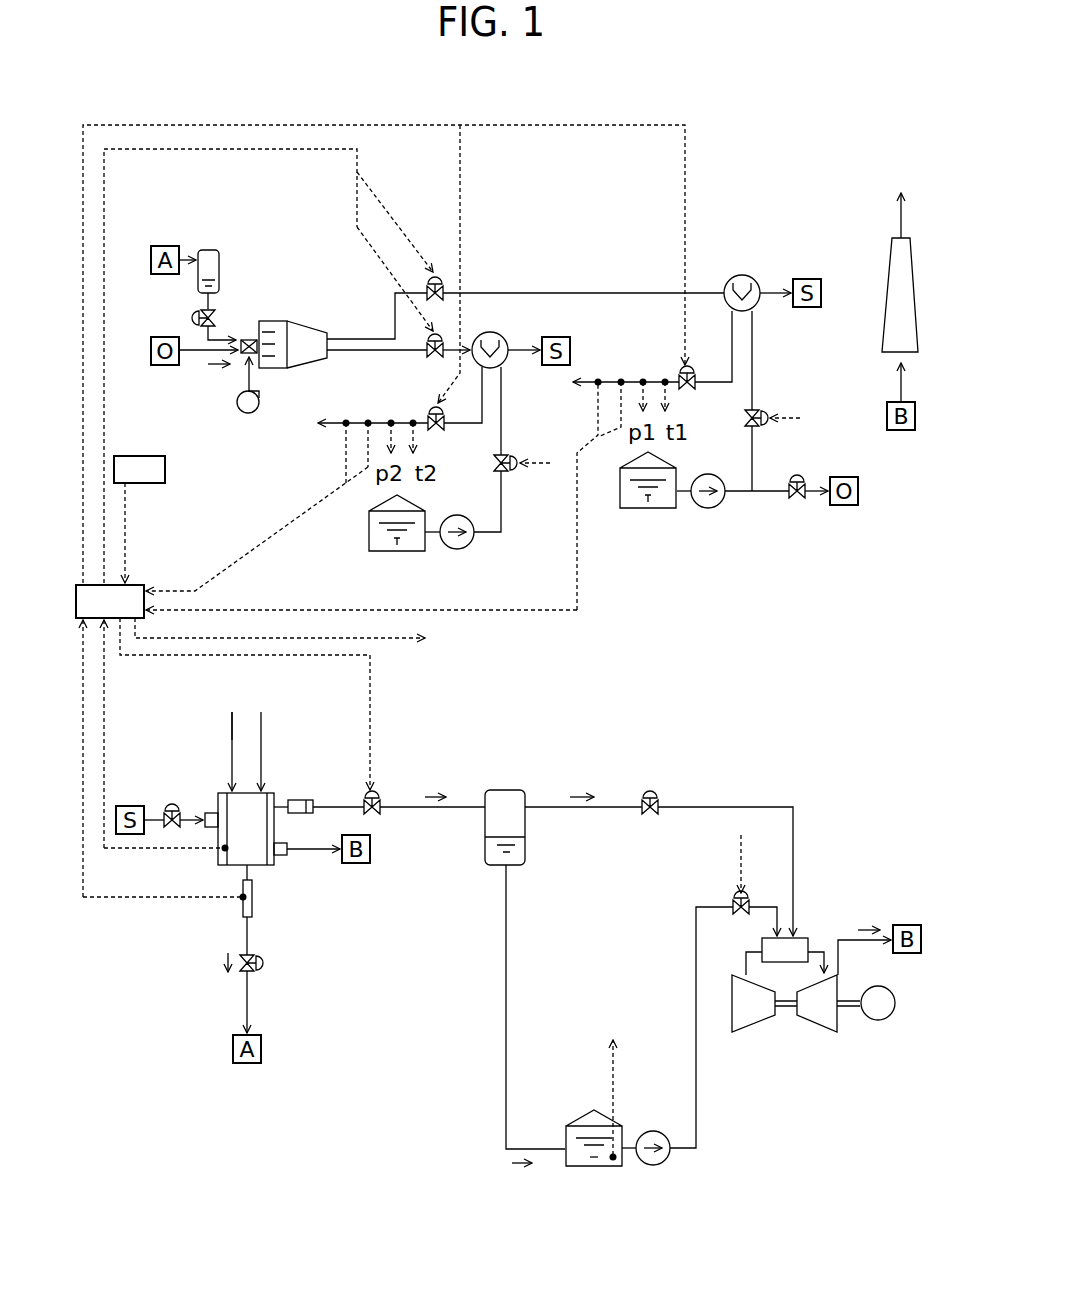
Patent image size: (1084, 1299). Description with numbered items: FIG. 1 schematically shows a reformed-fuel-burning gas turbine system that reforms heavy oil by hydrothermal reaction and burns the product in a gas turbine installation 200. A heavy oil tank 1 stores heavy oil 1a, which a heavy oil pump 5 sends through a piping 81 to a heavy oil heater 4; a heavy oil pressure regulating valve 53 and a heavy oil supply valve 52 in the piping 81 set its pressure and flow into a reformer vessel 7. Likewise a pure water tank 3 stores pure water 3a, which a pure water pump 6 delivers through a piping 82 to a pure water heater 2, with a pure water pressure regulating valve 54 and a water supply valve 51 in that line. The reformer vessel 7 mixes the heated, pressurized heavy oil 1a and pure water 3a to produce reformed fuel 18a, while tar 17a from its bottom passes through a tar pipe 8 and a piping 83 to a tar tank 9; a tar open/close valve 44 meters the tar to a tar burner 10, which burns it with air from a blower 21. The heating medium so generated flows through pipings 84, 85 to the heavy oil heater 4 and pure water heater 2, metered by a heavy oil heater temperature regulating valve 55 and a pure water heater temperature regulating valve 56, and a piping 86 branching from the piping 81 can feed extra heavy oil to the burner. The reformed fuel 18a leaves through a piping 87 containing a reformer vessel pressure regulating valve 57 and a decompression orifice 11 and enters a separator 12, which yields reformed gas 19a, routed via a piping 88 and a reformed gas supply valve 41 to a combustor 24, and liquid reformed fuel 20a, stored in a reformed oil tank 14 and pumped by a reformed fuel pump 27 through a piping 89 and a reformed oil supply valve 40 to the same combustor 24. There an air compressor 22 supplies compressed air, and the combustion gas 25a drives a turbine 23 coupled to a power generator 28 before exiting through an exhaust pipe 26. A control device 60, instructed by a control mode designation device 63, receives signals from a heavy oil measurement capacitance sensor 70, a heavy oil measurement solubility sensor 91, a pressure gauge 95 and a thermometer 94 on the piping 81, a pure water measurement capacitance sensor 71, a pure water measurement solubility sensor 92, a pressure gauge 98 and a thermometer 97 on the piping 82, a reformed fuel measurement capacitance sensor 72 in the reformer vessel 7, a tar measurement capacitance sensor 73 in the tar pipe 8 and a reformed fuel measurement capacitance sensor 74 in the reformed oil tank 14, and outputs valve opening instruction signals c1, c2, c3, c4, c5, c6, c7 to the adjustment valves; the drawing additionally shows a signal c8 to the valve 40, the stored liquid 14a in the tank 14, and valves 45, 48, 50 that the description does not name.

The heavy oil tank 1 is at (665, 462).
The heavy oil 1a is at (650, 537).
The pure water heater 2 is at (503, 337).
The pure water tank 3 is at (420, 500).
The pure water 3a is at (400, 577).
The heavy oil heater 4 is at (742, 275).
The heavy oil pump 5 is at (708, 508).
The pure water pump 6 is at (458, 549).
The reformer vessel 7 is at (271, 793).
The tar pipe 8 is at (253, 893).
The tar tank 9 is at (208, 250).
The tar burner 10 is at (290, 321).
The decompression orifice 11 is at (305, 800).
The separator 12 is at (505, 790).
The reformed oil tank 14 is at (580, 1115).
The liquid 14a is at (577, 1166).
The tar 17a is at (202, 965).
The reformed fuel 18a is at (435, 781).
The reformed gas 19a is at (583, 786).
The liquid reformed fuel 20a is at (534, 1033).
The blower 21 is at (248, 413).
The air compressor 22 is at (758, 1032).
The turbine 23 is at (817, 1032).
The combustor 24 is at (800, 938).
The combustion gas 25a is at (883, 548).
The exhaust pipe 26 is at (887, 272).
The reformed fuel pump 27 is at (654, 1131).
The power generator 28 is at (878, 1021).
The reformed oil supply valve 40 is at (750, 893).
The reformed gas supply valve 41 is at (650, 795).
The tar open/close valve 44 is at (197, 318).
The valve 45 is at (172, 806).
The valve 48 is at (268, 964).
The valve 50 is at (797, 478).
The high-temperature, high-pressure water supply valve 51 is at (445, 431).
The high-temperature, high-pressure heavy oil supply valve 52 is at (696, 370).
The heavy oil pressure regulating valve 53 is at (744, 418).
The pure water pressure regulating valve 54 is at (512, 455).
The heavy oil heater temperature regulating valve 55 is at (437, 278).
The pure water heater temperature regulating valve 56 is at (445, 340).
The reformer vessel pressure regulating valve 57 is at (380, 795).
The control device 60 is at (142, 585).
The control mode designation device 63 is at (137, 456).
The heavy oil measurement capacitance sensor 70 is at (621, 379).
The pure water measurement capacitance sensor 71 is at (366, 420).
The reformed fuel measurement capacitance sensor 72 is at (222, 850).
The tar measurement capacitance sensor 73 is at (240, 900).
The reformed fuel measurement capacitance sensor 74 is at (616, 1166).
The piping 81 is at (754, 357).
The piping 82 is at (503, 401).
The piping 83 is at (212, 304).
The piping 84 is at (537, 293).
The piping 85 is at (365, 339).
The piping 86 is at (190, 354).
The piping 87 is at (426, 810).
The piping 88 is at (793, 795).
The piping 89 is at (694, 948).
The heavy oil measurement solubility sensor 91 is at (597, 379).
The pure water measurement solubility sensor 92 is at (343, 420).
The thermometer 94 is at (665, 379).
The pressure gauge 95 is at (643, 379).
The thermometer 97 is at (414, 420).
The pressure gauge 98 is at (390, 420).
The gas turbine installation 200 is at (834, 1153).
The valve opening instruction signal c1 is at (268, 366).
The valve opening instruction signal c2 is at (387, 279).
The valve opening instruction signal c3 is at (384, 354).
The valve opening instruction signal c4 is at (445, 264).
The valve opening instruction signal c5 is at (245, 704).
The valve opening instruction signal c6 is at (472, 524).
The valve opening instruction signal c7 is at (538, 480).
The control signal c8 is at (725, 864).